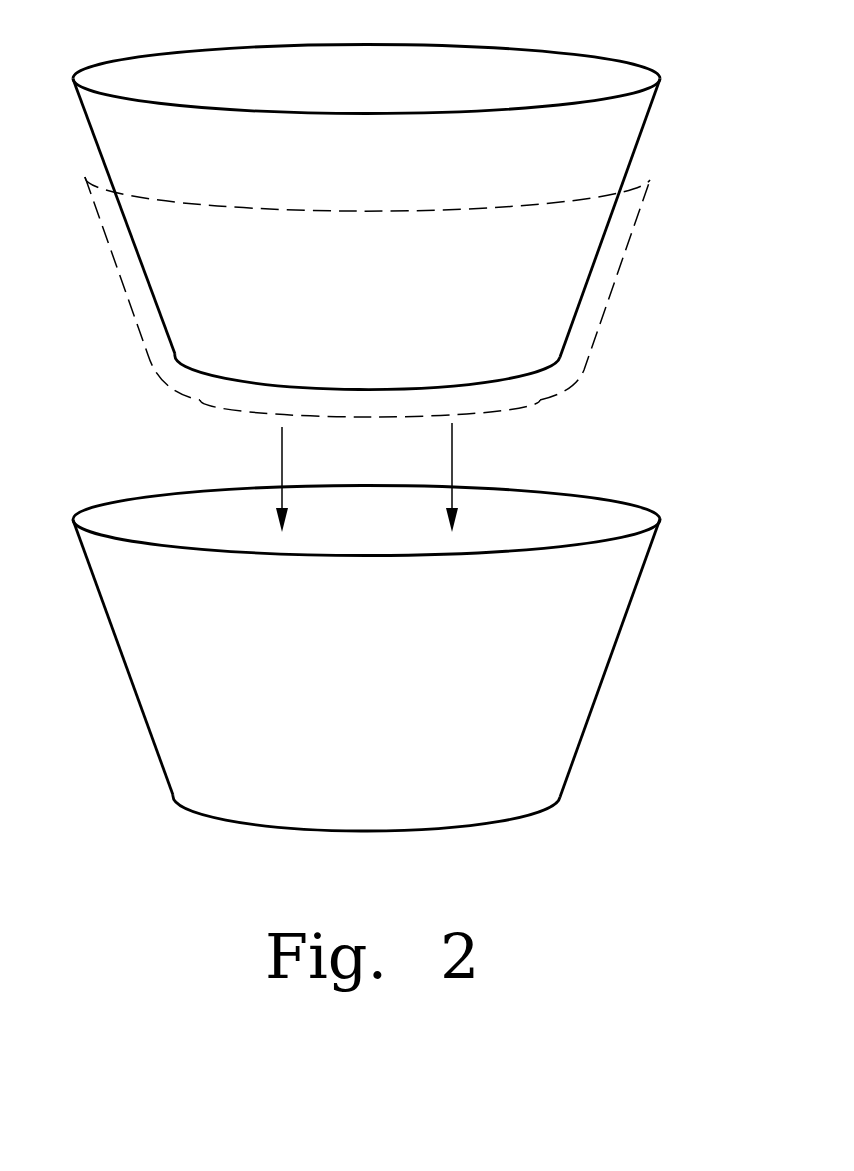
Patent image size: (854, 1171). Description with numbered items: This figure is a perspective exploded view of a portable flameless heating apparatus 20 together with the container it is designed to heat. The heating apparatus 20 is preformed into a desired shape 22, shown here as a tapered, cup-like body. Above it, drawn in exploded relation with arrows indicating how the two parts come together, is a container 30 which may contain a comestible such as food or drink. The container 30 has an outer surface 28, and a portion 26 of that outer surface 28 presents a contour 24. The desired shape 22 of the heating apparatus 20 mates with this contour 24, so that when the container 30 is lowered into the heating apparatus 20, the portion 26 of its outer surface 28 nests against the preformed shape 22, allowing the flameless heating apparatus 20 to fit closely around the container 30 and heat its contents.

The portable flameless heating apparatus 20 is at (399, 658).
The desired shape 22 is at (153, 672).
The contour 24 is at (613, 215).
The portion 26 is at (175, 300).
The outer surface 28 is at (642, 115).
The container 30 is at (428, 57).